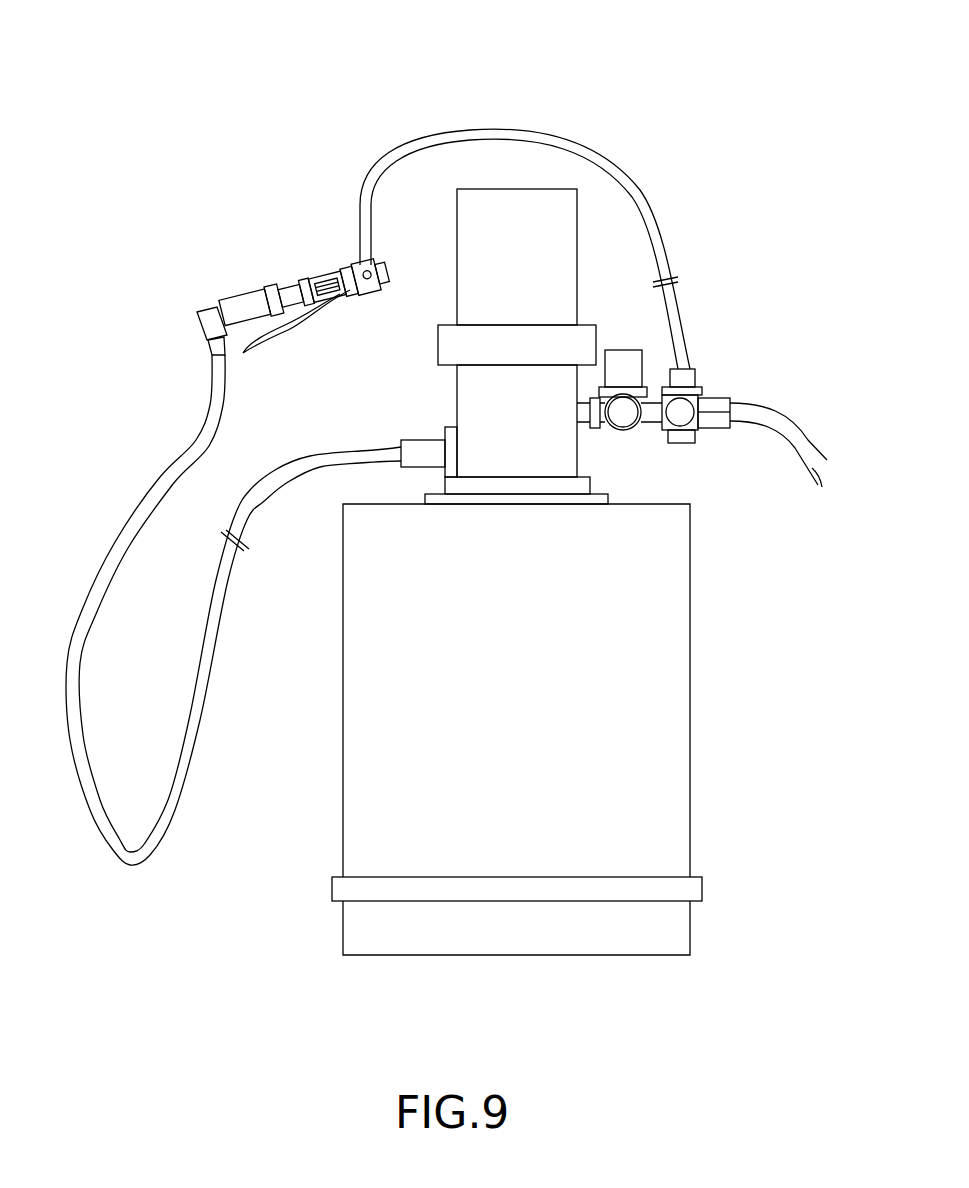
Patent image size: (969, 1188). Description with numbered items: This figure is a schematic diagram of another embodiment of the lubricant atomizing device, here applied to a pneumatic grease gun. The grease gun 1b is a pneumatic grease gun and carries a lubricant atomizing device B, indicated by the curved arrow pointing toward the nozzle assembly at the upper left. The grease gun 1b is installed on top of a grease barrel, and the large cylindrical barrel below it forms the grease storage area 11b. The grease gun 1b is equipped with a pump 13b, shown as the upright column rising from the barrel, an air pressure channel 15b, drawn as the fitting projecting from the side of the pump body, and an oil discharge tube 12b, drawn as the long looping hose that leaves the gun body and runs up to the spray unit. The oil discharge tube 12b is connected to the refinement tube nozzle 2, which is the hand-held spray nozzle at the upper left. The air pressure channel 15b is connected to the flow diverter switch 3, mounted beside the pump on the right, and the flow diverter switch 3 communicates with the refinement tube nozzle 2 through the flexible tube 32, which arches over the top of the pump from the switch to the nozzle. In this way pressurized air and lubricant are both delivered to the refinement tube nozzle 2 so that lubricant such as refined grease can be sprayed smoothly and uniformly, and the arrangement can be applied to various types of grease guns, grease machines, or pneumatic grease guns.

The lubricant atomizing device B is at (255, 128).
The flexible tube 32 is at (487, 133).
The refinement tube nozzle 2 is at (348, 247).
The oil discharge tube 12b is at (238, 305).
The pump 13b is at (480, 300).
The grease gun 1b is at (475, 398).
The air pressure channel 15b is at (625, 372).
The flow diverter switch 3 is at (724, 382).
The grease storage area 11b is at (397, 670).